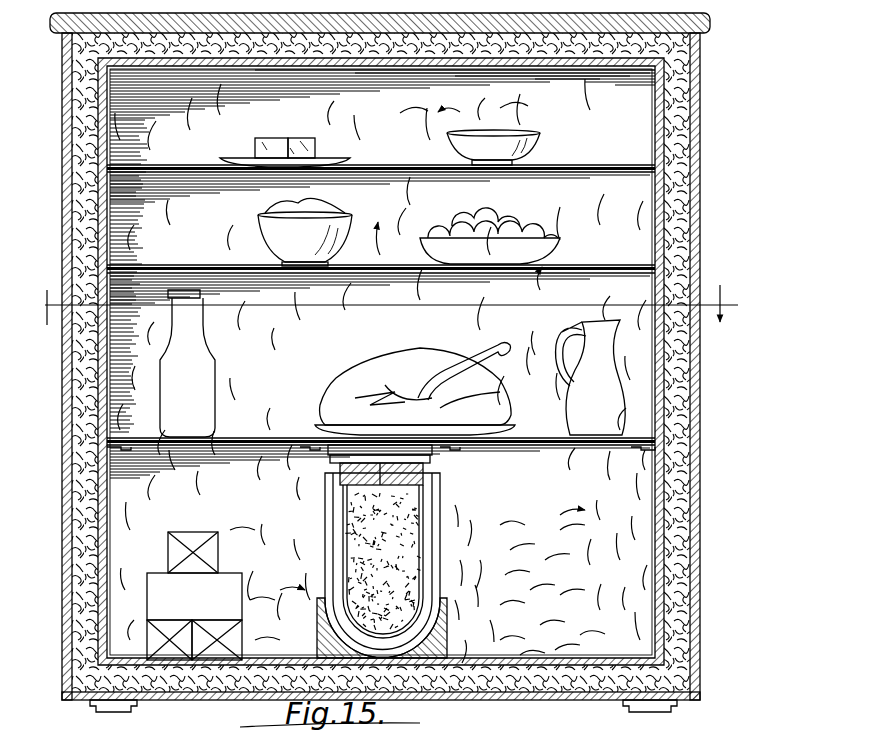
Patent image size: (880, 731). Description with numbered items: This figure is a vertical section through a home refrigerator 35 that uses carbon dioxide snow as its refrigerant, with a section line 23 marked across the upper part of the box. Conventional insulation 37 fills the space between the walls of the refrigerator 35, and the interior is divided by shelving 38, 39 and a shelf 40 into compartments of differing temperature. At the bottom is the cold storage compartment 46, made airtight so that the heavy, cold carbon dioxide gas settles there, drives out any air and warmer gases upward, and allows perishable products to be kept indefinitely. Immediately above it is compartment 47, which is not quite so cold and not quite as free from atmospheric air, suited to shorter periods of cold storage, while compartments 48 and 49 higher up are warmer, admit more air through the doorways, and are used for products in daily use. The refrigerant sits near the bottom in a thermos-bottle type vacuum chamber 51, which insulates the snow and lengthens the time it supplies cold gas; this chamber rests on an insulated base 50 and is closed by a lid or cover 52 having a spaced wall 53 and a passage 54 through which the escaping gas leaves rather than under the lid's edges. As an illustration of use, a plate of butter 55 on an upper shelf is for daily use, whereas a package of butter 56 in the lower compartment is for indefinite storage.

The section line 23- 23 is at (391, 305).
The home refrigerator 35 is at (107, 454).
The insulation 37 is at (76, 365).
The shelving 38 is at (603, 128).
The shelving 39 is at (600, 266).
The shelf 40 is at (229, 437).
The cold storage compartment 46 is at (551, 555).
The compartment 47 is at (382, 351).
The compartment 48 is at (413, 218).
The compartment 49 is at (612, 122).
The insulated base for ice container 50 is at (447, 638).
The vacuum chamber 51 is at (342, 540).
The lid or cover 52 is at (330, 468).
The spaced wall 53 is at (338, 437).
The passage 54 is at (425, 484).
The plate of butter 55 is at (311, 155).
The package of butter 56 is at (150, 583).